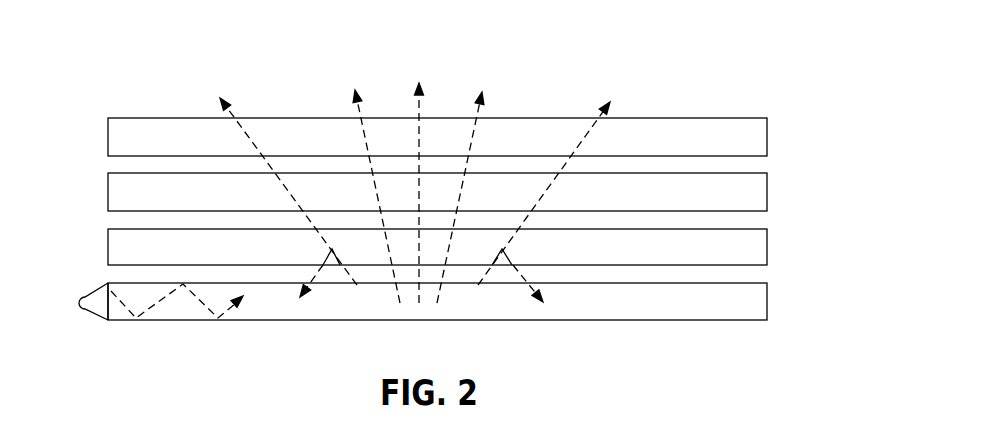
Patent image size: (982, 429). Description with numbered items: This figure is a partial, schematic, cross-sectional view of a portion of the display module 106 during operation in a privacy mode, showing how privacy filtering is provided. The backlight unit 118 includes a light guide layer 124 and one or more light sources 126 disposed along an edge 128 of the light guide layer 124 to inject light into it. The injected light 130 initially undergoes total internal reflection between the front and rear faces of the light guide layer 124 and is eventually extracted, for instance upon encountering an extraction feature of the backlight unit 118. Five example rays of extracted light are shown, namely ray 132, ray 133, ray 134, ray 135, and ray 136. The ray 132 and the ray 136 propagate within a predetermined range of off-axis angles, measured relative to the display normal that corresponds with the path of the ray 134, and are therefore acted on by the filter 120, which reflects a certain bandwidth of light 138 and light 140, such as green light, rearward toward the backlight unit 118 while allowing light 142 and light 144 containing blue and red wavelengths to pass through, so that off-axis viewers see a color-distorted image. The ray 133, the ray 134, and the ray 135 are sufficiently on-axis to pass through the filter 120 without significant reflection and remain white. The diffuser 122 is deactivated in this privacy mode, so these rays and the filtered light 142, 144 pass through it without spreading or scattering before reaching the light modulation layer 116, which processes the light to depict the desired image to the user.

The display module 106 is at (732, 52).
The light modulation layer 116 is at (740, 148).
The diffuser 122 is at (740, 203).
The filter 120 is at (740, 256).
The light guide layer 124 is at (740, 311).
The backlight unit 118 is at (770, 300).
The light source 126 is at (83, 293).
The edge 128 is at (96, 313).
The light 130 is at (206, 306).
The ray 132 is at (362, 289).
The ray 133 is at (363, 130).
The ray 134 is at (417, 102).
The ray 135 is at (475, 128).
The ray 136 is at (470, 290).
The light 138 is at (318, 273).
The light 140 is at (535, 287).
The light 142 is at (248, 137).
The light 144 is at (587, 135).